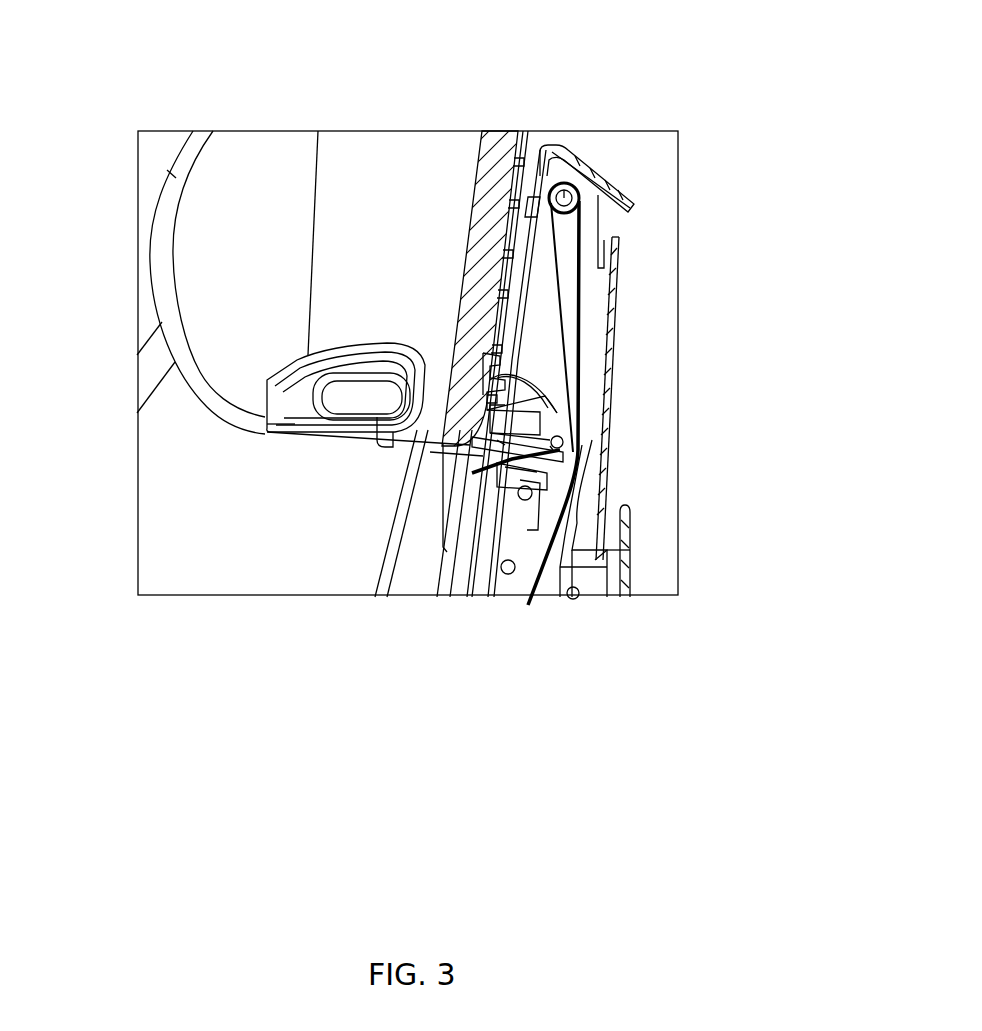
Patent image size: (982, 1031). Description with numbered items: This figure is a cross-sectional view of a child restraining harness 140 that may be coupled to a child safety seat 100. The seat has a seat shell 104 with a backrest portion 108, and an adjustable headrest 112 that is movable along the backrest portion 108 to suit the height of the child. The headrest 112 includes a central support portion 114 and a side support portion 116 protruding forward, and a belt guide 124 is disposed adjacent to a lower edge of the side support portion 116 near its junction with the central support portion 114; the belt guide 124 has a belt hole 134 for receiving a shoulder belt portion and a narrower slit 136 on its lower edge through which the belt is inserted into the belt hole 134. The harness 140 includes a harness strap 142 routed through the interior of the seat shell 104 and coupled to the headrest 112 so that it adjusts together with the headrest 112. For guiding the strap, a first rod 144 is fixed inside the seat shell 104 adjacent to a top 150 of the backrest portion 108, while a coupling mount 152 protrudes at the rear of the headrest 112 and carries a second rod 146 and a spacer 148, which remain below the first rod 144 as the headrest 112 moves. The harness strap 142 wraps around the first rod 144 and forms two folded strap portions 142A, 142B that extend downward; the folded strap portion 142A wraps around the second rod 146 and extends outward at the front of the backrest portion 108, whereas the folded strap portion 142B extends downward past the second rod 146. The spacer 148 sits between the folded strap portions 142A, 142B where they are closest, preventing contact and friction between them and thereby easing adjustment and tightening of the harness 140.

The child safety seat 100 is at (648, 165).
The seat shell 104 is at (616, 309).
The backrest portion 108 is at (462, 597).
The headrest 112 is at (166, 166).
The central support portion 114 is at (457, 150).
The side support portion 116 is at (226, 160).
The belt guide 124 is at (330, 438).
The belt hole 134 is at (357, 384).
The slit 136 is at (483, 456).
The child restraining harness 140 is at (583, 480).
The harness strap 142 is at (681, 378).
The folded strap portion 142A is at (560, 280).
The folded strap portion 142B is at (580, 252).
The first rod 144 is at (565, 152).
The second rod 146 is at (500, 445).
The spacer 148 is at (576, 460).
The top 150 is at (557, 175).
The coupling mount 152 is at (503, 400).